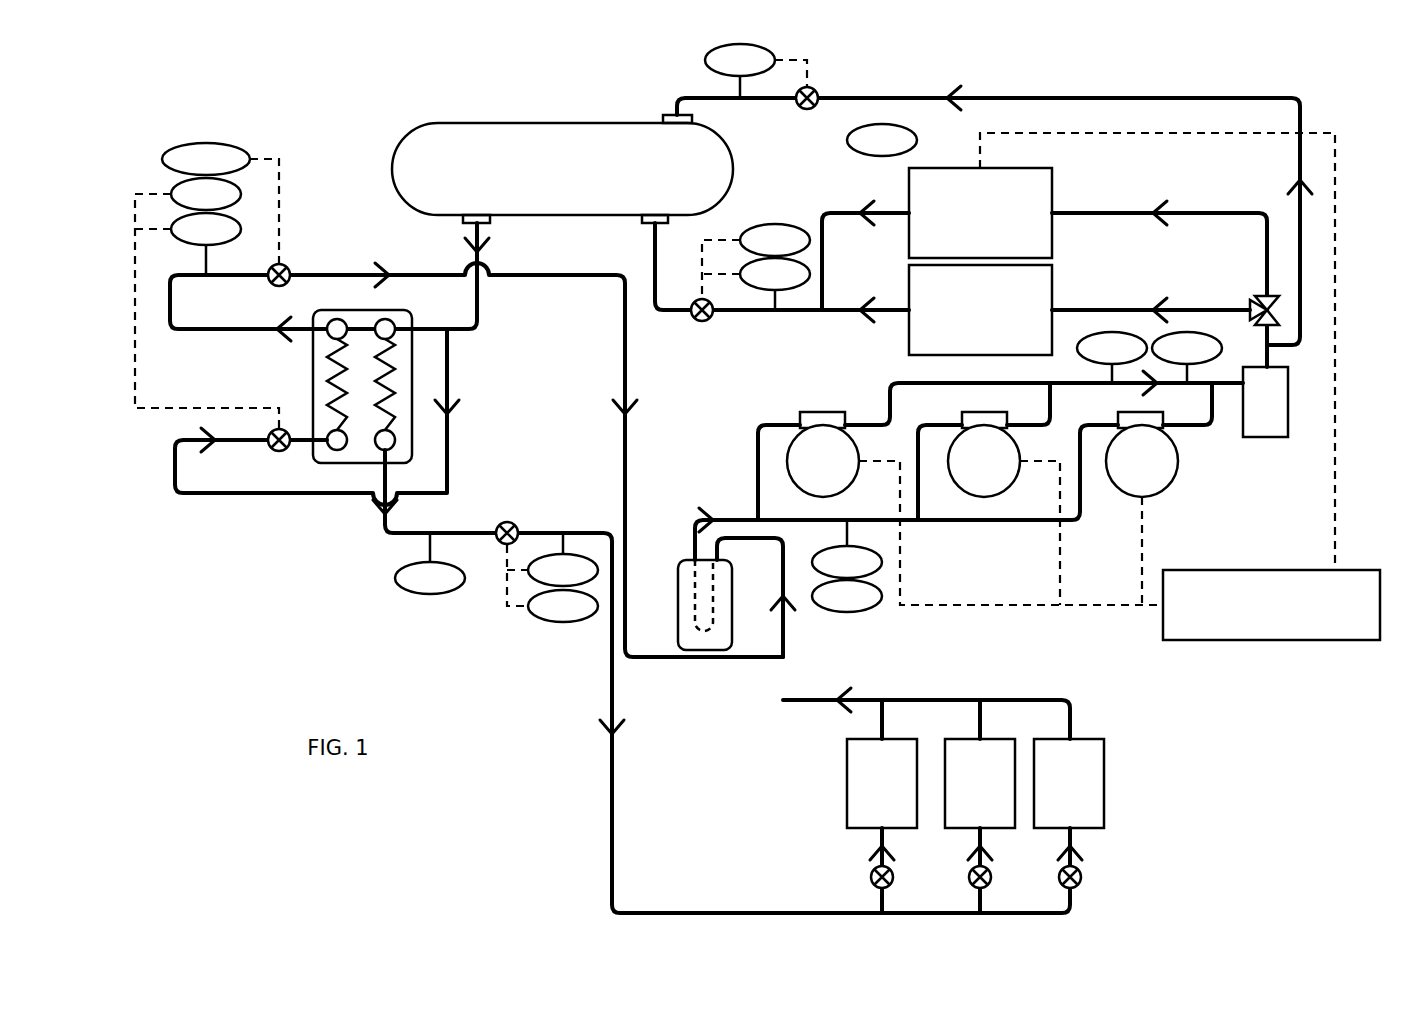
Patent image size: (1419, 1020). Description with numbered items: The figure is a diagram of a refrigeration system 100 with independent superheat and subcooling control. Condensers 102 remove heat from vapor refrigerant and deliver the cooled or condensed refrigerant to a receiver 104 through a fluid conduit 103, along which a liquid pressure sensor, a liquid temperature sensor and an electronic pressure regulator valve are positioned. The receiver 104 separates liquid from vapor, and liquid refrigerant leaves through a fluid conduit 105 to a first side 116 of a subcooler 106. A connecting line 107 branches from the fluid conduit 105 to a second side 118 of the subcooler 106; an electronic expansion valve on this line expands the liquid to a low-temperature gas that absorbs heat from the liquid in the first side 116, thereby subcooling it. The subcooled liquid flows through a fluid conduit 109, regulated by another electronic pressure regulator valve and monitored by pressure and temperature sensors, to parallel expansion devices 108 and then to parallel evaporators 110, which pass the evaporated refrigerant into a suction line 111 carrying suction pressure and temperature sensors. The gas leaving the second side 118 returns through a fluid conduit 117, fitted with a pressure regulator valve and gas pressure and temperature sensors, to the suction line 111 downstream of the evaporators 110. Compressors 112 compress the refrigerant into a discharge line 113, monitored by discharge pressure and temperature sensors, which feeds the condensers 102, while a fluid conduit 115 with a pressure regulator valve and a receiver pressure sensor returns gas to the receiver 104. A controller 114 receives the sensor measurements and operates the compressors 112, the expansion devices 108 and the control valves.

The refrigeration system 100 is at (195, 82).
The condensers 102 is at (1045, 190).
The fluid conduit 103 is at (838, 315).
The receiver 104 is at (428, 140).
The fluid conduit 105 is at (483, 318).
The subcooler 106 is at (387, 314).
The connecting line 107 is at (233, 495).
The expansion devices 108 is at (1081, 877).
The fluid conduit 109 is at (578, 533).
The evaporators 110 is at (1095, 750).
The suction line 111 is at (973, 523).
The compressors 112 is at (793, 452).
The discharge line 113 is at (897, 377).
The controller 114 is at (1360, 570).
The fluid conduit 115 is at (1043, 97).
The first side 116 is at (383, 381).
The fluid conduit 117 is at (172, 307).
The second side 118 is at (340, 392).